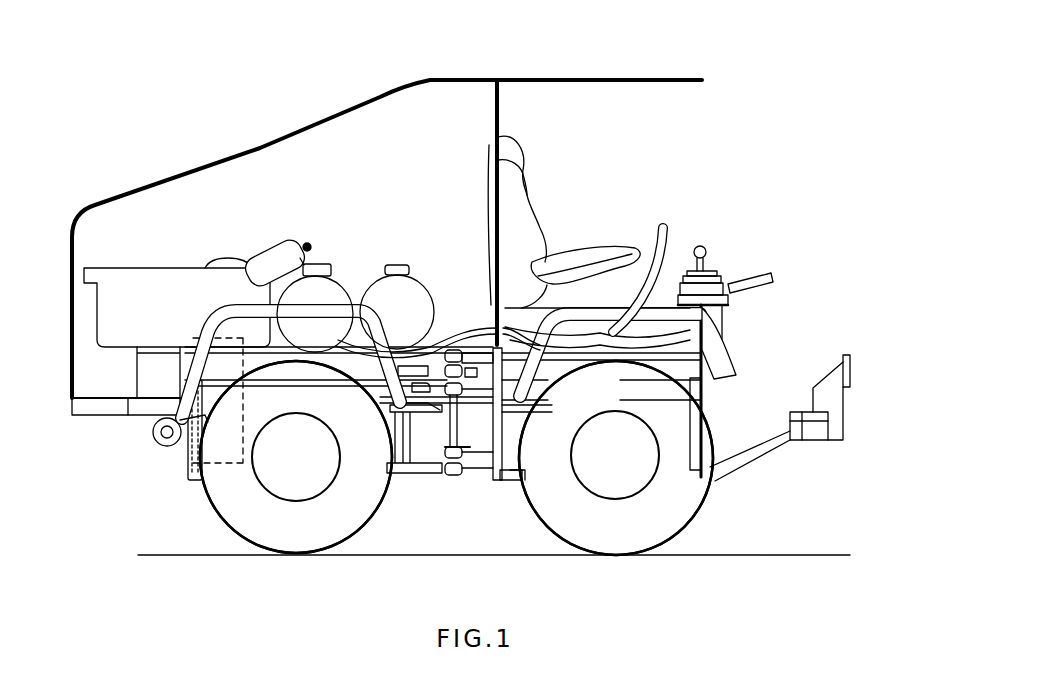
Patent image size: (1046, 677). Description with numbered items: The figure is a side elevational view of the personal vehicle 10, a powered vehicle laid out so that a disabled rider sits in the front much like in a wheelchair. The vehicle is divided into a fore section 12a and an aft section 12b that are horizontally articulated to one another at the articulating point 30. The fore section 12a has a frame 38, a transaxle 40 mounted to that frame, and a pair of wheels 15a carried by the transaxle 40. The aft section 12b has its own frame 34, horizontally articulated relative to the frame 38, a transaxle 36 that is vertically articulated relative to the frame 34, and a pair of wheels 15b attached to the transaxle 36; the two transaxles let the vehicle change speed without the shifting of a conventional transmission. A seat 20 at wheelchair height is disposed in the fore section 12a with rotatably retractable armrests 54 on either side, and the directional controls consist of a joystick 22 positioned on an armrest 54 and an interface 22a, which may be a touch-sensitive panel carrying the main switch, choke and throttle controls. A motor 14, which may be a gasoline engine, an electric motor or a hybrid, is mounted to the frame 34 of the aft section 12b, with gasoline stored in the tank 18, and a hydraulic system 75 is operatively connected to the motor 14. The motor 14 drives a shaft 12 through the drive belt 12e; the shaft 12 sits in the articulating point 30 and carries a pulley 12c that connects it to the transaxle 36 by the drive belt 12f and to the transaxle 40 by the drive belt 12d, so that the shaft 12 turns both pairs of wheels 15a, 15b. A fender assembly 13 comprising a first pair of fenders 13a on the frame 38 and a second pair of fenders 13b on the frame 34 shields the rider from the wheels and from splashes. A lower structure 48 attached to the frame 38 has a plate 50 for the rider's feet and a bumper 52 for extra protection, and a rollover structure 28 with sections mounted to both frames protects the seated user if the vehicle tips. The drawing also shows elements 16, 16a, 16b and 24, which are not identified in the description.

The personal vehicle 10 is at (754, 104).
The shaft 12 is at (446, 472).
The fore section 12a is at (700, 392).
The aft section 12b is at (190, 470).
The pulley 12c is at (470, 476).
The drive belt 12d is at (507, 482).
The drive belt 12e is at (360, 390).
The drive belt 12f is at (423, 408).
The fender assembly 13 is at (205, 330).
The first pair of fenders 13a is at (713, 327).
The second pair of fenders 13b is at (213, 311).
The motor 14 is at (116, 284).
The pair of wheels 15a is at (625, 536).
The pair of wheels 15b is at (297, 532).
The fuel tank 16 is at (327, 292).
The fuel filler neck 16a is at (282, 262).
The tank mount 16b is at (222, 467).
The tank 18 is at (417, 292).
The seat 20 is at (535, 214).
The joystick 22 is at (705, 248).
The interface 22a is at (776, 272).
The roll bar 24 is at (651, 264).
The rollover structure 28 is at (458, 79).
The articulating point 30 is at (452, 478).
The frame 34 is at (190, 452).
The transaxle 36 is at (296, 457).
The frame 38 is at (520, 472).
The transaxle 40 is at (616, 458).
The lower structure 48 is at (780, 449).
The plate 50 is at (795, 412).
The bumper 52 is at (852, 371).
The armrests 54 is at (585, 254).
The hydraulic system 75 is at (468, 316).